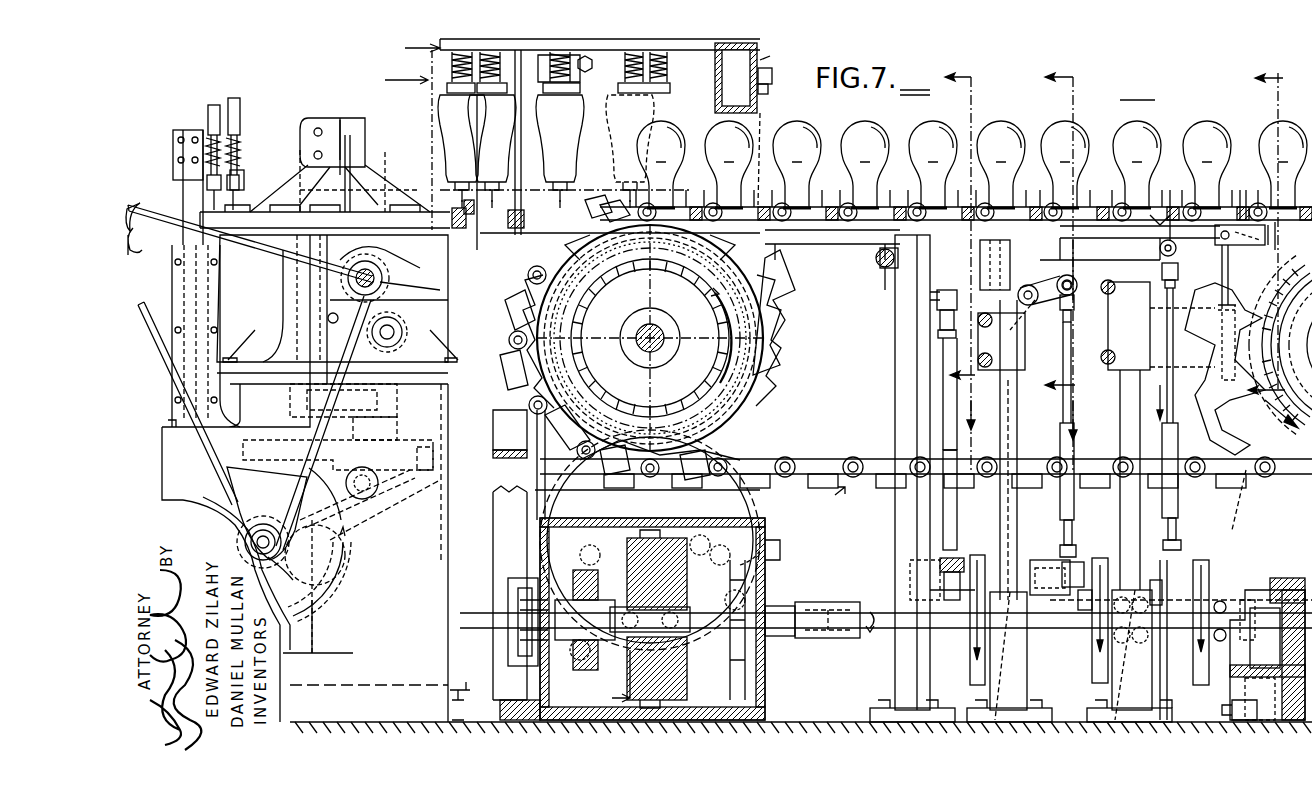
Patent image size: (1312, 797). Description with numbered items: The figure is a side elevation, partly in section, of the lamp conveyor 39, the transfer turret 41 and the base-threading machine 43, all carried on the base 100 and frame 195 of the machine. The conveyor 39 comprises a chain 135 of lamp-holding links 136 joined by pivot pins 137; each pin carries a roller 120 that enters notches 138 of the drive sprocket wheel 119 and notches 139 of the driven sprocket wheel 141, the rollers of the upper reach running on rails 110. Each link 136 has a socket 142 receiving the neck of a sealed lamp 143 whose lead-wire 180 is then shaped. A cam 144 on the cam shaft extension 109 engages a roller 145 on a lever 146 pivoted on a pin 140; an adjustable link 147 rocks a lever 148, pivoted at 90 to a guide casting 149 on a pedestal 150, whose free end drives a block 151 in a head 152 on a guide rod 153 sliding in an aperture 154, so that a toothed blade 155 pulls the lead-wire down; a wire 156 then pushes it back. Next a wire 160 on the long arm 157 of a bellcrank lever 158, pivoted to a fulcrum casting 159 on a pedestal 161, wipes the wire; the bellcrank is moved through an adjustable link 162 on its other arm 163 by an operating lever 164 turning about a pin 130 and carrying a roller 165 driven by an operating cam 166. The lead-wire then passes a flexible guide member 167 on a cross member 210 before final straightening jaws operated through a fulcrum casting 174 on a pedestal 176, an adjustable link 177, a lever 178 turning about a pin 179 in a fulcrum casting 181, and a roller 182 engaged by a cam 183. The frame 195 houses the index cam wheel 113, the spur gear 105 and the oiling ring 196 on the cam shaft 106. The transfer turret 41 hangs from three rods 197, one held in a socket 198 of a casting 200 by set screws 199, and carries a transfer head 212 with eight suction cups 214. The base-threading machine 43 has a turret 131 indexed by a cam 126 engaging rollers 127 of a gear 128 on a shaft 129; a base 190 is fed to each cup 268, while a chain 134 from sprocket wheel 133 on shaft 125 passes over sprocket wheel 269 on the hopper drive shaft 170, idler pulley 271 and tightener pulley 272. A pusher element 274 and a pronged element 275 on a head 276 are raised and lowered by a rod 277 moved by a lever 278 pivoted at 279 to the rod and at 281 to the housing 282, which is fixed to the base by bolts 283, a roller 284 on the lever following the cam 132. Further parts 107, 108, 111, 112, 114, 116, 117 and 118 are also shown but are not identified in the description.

The lamp conveyor 39 is at (1136, 93).
The transfer turret 41 is at (389, 81).
The base-threading machine 43 is at (295, 134).
The pivot 90 is at (1067, 285).
The base 100 is at (855, 720).
The spur gear 105 is at (491, 374).
The cam shaft 106 is at (738, 660).
The end plate 107 is at (512, 590).
The coupling 108 is at (780, 607).
The cam shaft extension 109 is at (1075, 624).
The rails 110 is at (832, 258).
The shaft 111 is at (835, 633).
The bearing housing 112 is at (1252, 585).
The index cam wheel 113 is at (715, 650).
The gear 114 is at (772, 557).
The gear 116 is at (760, 453).
The ring 117 is at (760, 408).
The shaft 118 is at (665, 340).
The conveyor drive sprocket wheel 119 is at (805, 442).
The roller 120 is at (530, 404).
The shaft 125 is at (245, 546).
The cam 126 is at (343, 528).
The rollers 127 is at (385, 510).
The gear 128 is at (383, 483).
The shaft 129 is at (365, 423).
The pin 130 is at (1051, 560).
The turret 131 is at (393, 155).
The cam 132 is at (325, 592).
The sprocket wheel 133 is at (269, 555).
The chain 134 is at (265, 242).
The chain 135 is at (935, 113).
The lamp-holding links 136 is at (820, 205).
The pivot pins 137 is at (815, 240).
The notches 138 is at (783, 362).
The notches 139 is at (1220, 450).
The pin 140 is at (1128, 580).
The conveyor driven sprocket wheel 141 is at (1290, 442).
The socket 142 is at (620, 188).
The lamp 143 is at (862, 121).
The cam 144 is at (1190, 570).
The roller 145 is at (1188, 568).
The lever 146 is at (1180, 620).
The adjustable link 147 is at (1172, 418).
The lever 148 is at (1168, 260).
The guide casting 149 is at (1160, 332).
The pedestal 150 is at (1115, 420).
The block 151 is at (1281, 244).
The head 152 is at (1240, 245).
The guide rod 153 is at (1242, 312).
The aperture 154 is at (1244, 302).
The toothed blade 155 is at (1245, 185).
The wire 156 is at (1168, 204).
The long arm 157 is at (1032, 284).
The bellcrank lever 158 is at (1040, 375).
The fulcrum casting 159 is at (1001, 341).
The wire 160 is at (1042, 205).
The pedestal 161 is at (1008, 428).
The adjustable link 162 is at (1062, 508).
The arm 163 is at (1060, 365).
The operating lever 164 is at (1098, 545).
The roller 165 is at (1104, 558).
The operating cam 166 is at (1100, 681).
The flexible guide member 167 is at (972, 205).
The hopper drive shaft 170 is at (396, 265).
The fulcrum casting 174 is at (885, 270).
The pedestal 176 is at (895, 362).
The adjustable link 177 is at (940, 328).
The lever 178 is at (940, 555).
The pin 179 is at (915, 574).
The lead-wire 180 is at (449, 197).
The fulcrum casting 181 is at (940, 663).
The roller 182 is at (959, 556).
The cam 183 is at (980, 673).
The base 190 is at (417, 212).
The frame 195 is at (753, 553).
The oiling ring 196 is at (748, 678).
The rods 197 is at (760, 48).
The socket 198 is at (770, 62).
The set screws 199 is at (768, 87).
The casting 200 is at (768, 113).
The cross member 210 is at (994, 265).
The transfer head 212 is at (662, 58).
The suction cups 214 is at (440, 100).
The pockets or cups 268 is at (290, 198).
The sprocket wheel 269 is at (419, 290).
The idler pulley 271 is at (165, 210).
The tightener pulley 272 is at (403, 333).
The pusher element 274 is at (160, 238).
The pronged element 275 is at (240, 195).
The head 276 is at (200, 105).
The vertically reciprocable rod 277 is at (173, 158).
The lever 278 is at (225, 470).
The pivot 279 is at (175, 505).
The pivot 281 is at (357, 499).
The housing 282 is at (440, 550).
The bolts 283 is at (455, 664).
The roller 284 is at (299, 428).